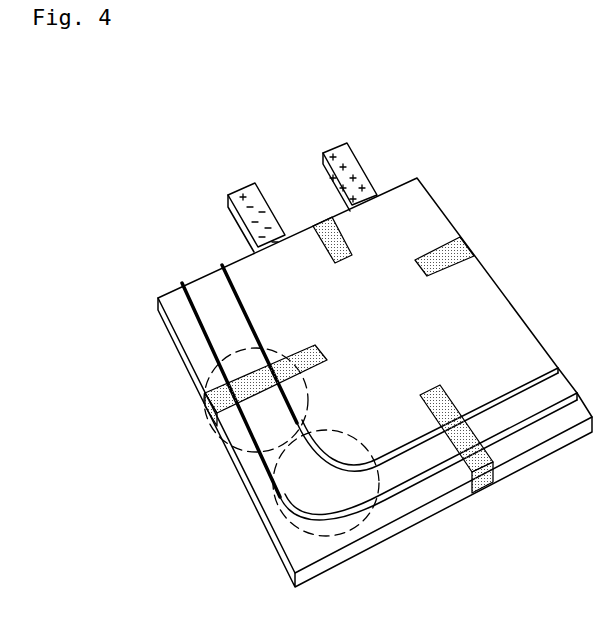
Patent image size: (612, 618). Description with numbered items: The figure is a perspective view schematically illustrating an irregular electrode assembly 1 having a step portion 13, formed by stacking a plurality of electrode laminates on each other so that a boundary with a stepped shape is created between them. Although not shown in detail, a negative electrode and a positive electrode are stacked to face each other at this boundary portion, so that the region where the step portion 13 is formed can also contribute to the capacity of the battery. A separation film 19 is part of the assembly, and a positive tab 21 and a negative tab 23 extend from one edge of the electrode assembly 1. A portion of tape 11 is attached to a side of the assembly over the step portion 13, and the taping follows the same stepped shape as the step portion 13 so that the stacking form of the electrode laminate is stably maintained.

The irregular electrode assembly 1 is at (112, 77).
The portion of tape 11 is at (447, 250).
The step portion 13 is at (277, 503).
The separation film 19 is at (503, 328).
The positive tab 21 is at (335, 152).
The negative tab 23 is at (246, 198).